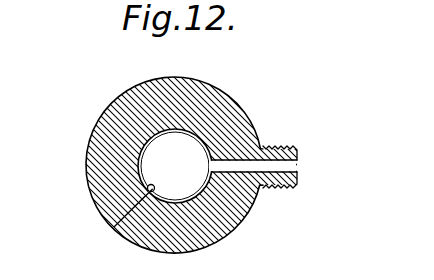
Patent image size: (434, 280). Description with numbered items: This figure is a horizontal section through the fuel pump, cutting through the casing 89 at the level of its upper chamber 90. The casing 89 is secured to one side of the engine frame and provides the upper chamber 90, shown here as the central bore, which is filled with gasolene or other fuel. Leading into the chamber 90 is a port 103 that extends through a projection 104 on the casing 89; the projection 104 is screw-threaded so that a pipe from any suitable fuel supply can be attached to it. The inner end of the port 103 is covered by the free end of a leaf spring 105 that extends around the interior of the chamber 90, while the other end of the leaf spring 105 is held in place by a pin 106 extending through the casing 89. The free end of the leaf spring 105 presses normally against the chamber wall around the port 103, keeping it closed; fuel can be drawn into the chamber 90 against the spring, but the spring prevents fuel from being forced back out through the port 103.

The casing 89 is at (97, 143).
The upper chamber 90 is at (175, 166).
The port 103 is at (284, 165).
The projection 104 is at (279, 148).
The leaf spring 105 is at (147, 149).
The pin 106 is at (117, 222).